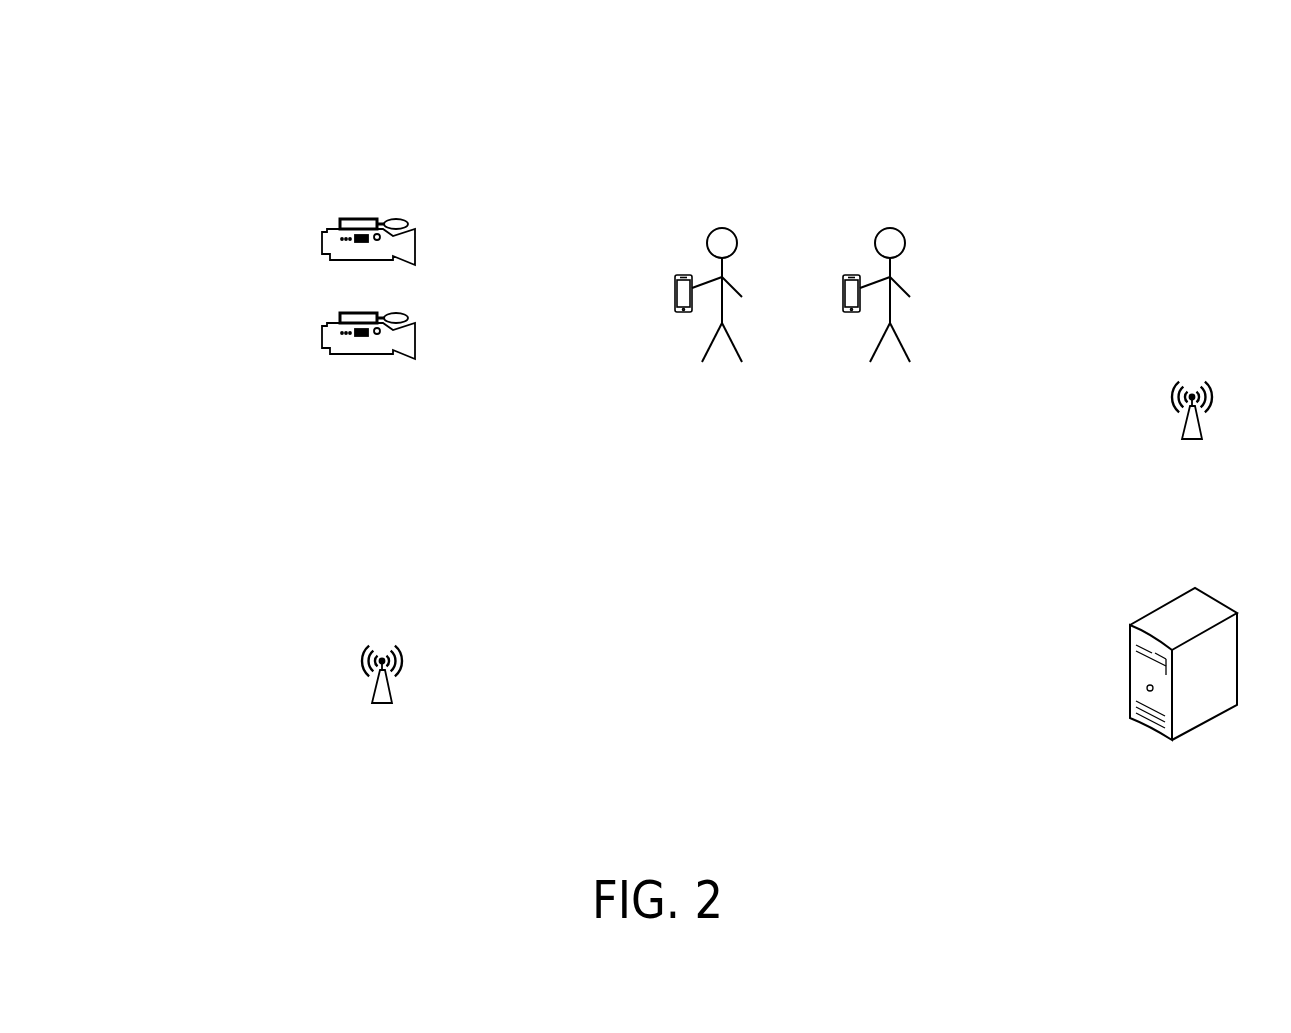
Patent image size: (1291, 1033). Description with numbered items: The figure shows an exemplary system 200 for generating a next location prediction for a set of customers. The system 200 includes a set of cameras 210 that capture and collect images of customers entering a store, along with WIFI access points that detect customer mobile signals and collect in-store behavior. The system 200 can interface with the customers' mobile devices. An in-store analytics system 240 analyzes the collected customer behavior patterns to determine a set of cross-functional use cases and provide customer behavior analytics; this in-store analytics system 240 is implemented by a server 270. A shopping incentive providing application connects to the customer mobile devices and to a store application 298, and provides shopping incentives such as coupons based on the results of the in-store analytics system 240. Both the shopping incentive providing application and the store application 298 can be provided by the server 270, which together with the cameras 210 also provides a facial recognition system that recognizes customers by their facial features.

The system 200 is at (185, 40).
The cameras 210 is at (359, 188).
The in-store analytics system 240 is at (1181, 525).
The server 270 is at (1220, 697).
The store application 298 is at (1199, 552).